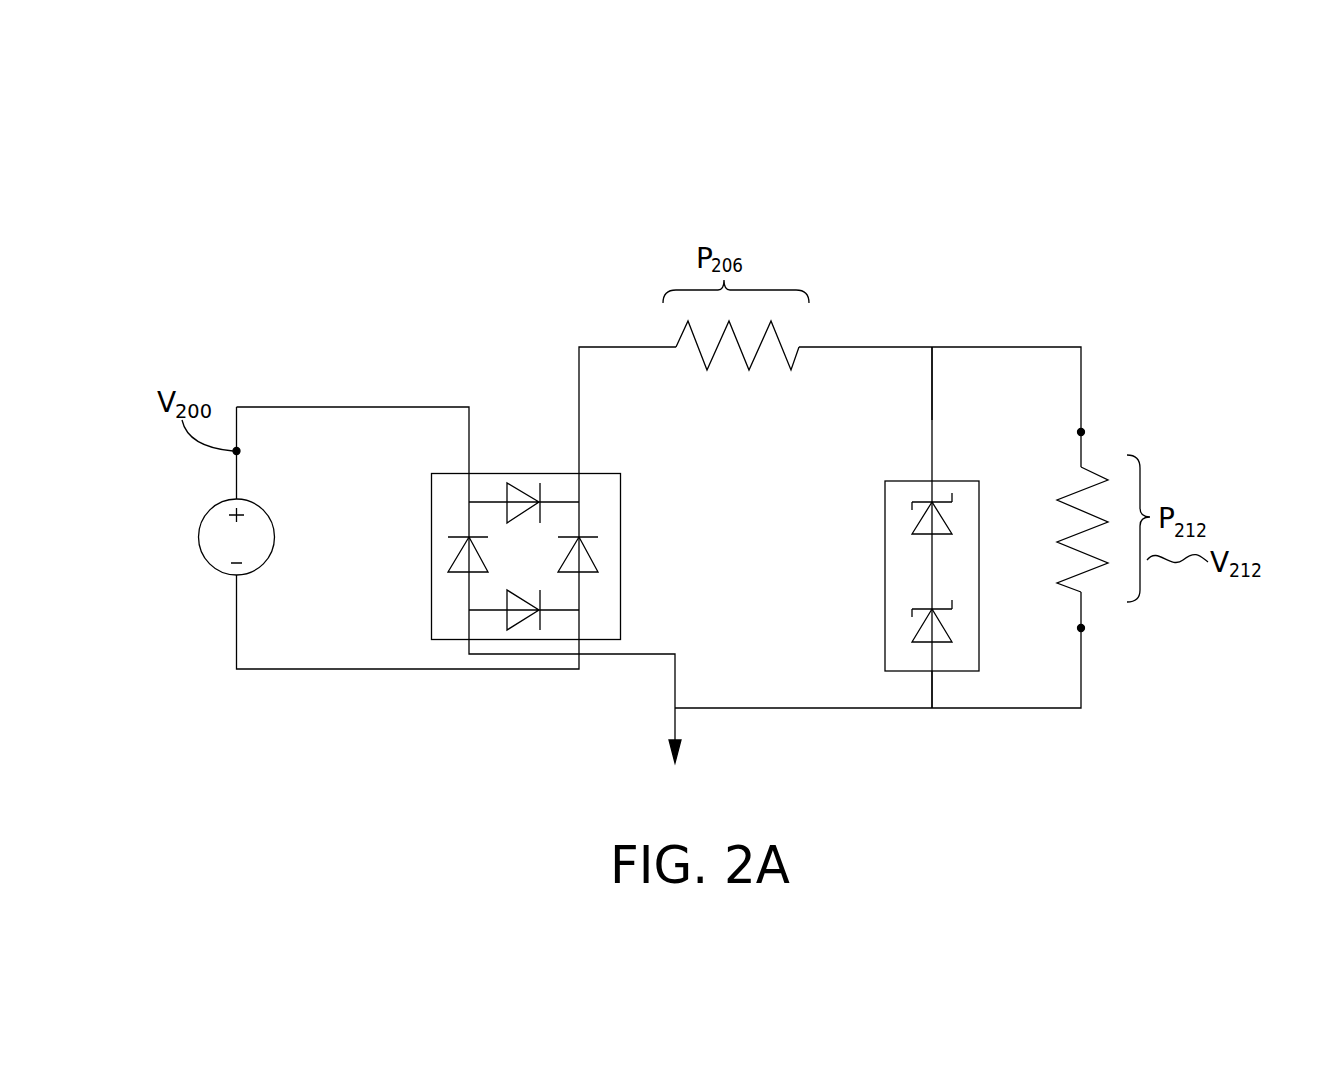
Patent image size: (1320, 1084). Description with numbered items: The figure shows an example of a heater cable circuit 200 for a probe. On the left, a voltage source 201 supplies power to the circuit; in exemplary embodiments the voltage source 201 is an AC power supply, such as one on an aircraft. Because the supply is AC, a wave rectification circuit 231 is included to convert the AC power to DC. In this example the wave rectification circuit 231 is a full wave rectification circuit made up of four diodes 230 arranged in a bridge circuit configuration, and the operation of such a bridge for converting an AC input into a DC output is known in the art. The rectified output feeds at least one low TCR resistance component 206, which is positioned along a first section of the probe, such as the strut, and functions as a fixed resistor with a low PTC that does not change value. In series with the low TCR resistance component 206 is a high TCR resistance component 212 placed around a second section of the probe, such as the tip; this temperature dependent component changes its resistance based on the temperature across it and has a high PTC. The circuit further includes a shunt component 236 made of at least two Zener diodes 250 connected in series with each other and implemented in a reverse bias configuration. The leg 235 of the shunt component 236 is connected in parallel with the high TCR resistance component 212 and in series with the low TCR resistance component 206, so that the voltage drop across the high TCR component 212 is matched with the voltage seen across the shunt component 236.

The heater cable circuit 200 is at (432, 188).
The voltage source 201 is at (197, 537).
The low TCR resistance component 206 is at (750, 364).
The high TCR resistance component 212 is at (1057, 498).
The diode 230 is at (448, 562).
The wave rectification circuit 231 is at (431, 622).
The leg 235 is at (934, 388).
The shunt component 236 is at (952, 673).
The Zener diode 250 is at (927, 637).